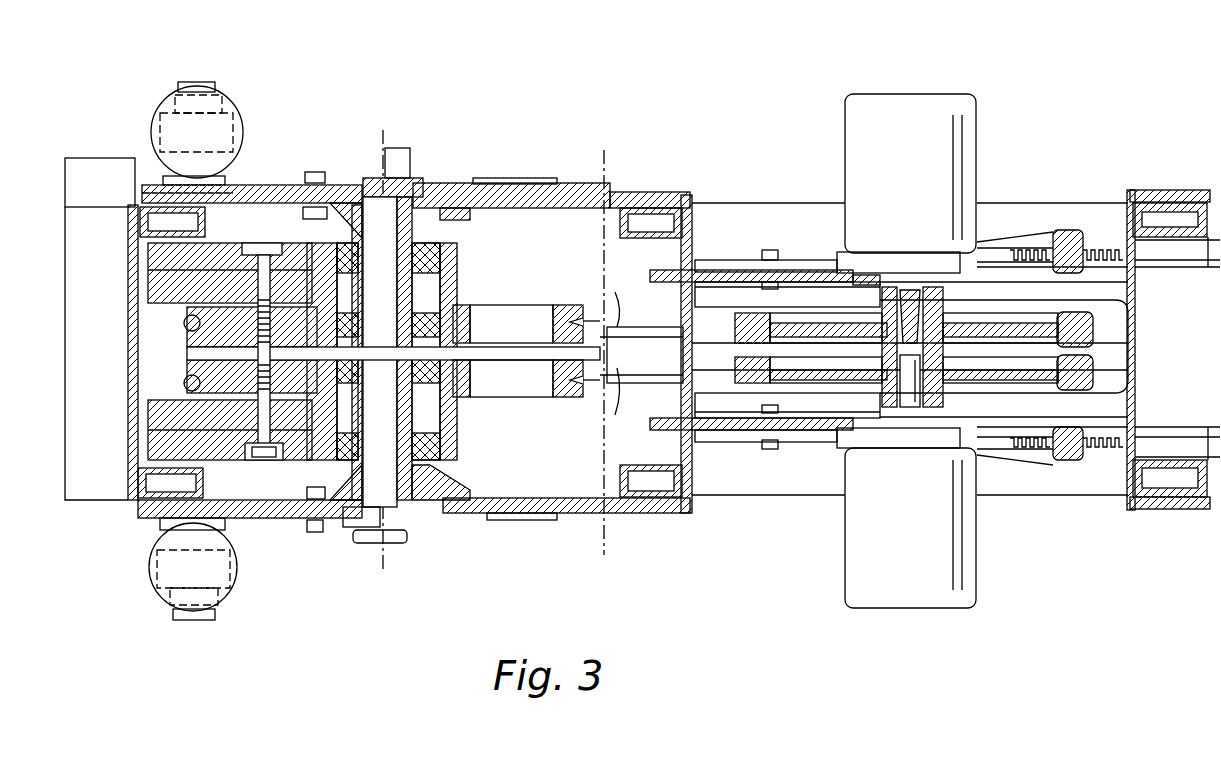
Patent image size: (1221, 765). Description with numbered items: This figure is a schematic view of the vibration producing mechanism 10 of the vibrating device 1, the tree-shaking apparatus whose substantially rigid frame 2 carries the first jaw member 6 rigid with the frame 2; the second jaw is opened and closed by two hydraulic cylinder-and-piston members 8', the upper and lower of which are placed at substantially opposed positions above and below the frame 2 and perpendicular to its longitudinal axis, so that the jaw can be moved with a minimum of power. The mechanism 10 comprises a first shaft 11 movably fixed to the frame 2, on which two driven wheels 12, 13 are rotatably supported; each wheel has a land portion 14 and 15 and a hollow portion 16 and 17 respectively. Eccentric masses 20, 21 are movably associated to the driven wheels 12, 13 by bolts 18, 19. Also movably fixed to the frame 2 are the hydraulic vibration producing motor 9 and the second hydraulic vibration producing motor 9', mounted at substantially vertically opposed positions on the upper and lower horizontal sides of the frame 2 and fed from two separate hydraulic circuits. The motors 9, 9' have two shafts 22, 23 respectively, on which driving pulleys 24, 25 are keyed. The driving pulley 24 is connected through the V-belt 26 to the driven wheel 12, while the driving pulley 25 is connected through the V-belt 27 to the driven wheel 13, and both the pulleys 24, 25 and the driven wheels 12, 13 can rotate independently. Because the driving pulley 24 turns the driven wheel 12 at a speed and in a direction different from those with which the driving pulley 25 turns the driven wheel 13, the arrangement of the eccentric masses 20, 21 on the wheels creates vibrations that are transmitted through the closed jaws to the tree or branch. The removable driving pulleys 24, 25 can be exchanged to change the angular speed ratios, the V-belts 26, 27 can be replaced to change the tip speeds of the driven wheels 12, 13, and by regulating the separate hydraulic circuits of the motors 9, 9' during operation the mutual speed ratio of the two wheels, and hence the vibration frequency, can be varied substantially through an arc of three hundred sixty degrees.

The vibrating device 1 is at (718, 187).
The frame 2 is at (720, 500).
The first jaw member 6 is at (93, 170).
The hydraulic cylinder-and-piston members 8' is at (215, 351).
The hydraulic vibration producing motor 9 is at (892, 183).
The second hydraulic vibration producing motor 9' is at (886, 518).
The vibration producing mechanism 10 is at (1110, 180).
The first shaft 11 is at (372, 218).
The driven wheel 12 is at (562, 317).
The driven wheel 13 is at (560, 385).
The land portion 14 is at (188, 337).
The land portion 15 is at (188, 368).
The hollow portion 16 is at (492, 317).
The hollow portion 17 is at (493, 383).
The bolt 18 is at (263, 243).
The bolt 19 is at (263, 437).
The eccentric mass 20 is at (160, 258).
The eccentric mass 21 is at (148, 415).
The shaft 22 is at (915, 305).
The shaft 23 is at (913, 407).
The driving pulley 24 is at (755, 320).
The driving pulley 25 is at (755, 383).
The V-belt 26 is at (593, 317).
The V-belt 27 is at (593, 387).